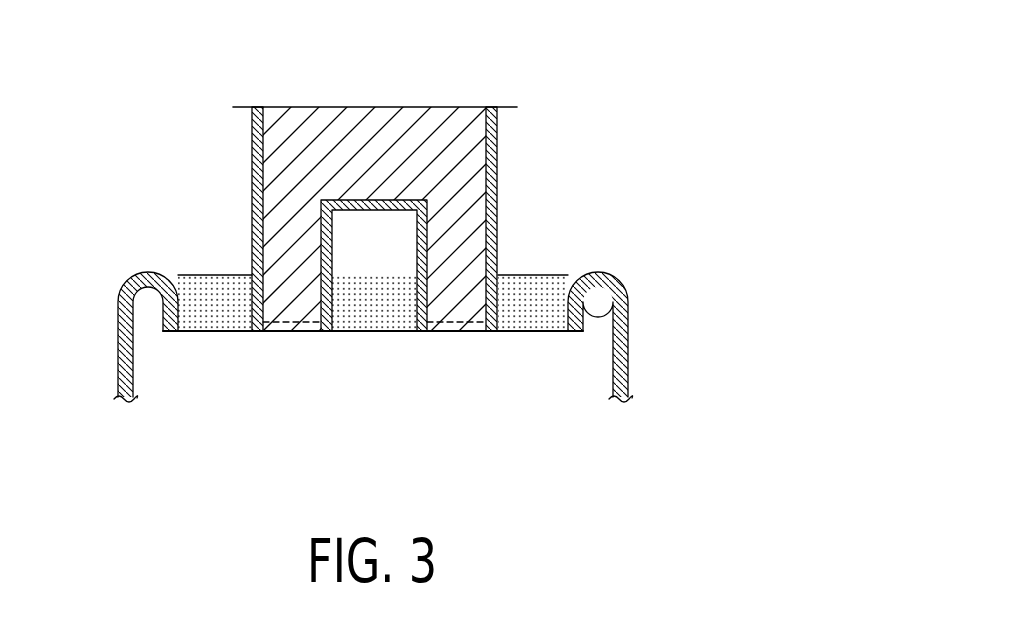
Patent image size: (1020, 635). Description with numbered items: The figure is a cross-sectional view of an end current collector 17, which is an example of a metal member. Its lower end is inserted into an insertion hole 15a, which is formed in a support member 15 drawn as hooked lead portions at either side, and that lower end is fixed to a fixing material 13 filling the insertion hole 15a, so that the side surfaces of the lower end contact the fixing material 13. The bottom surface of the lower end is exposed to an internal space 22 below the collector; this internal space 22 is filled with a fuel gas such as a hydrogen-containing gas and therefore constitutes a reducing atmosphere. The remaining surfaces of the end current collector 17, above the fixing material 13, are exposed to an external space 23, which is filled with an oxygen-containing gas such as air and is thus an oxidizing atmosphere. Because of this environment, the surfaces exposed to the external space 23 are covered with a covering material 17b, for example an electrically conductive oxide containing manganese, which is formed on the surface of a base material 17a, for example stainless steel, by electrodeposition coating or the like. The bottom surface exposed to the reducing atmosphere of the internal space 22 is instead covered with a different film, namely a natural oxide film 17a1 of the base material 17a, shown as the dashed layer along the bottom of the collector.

The fixing material 13 is at (220, 320).
The support member 15 is at (118, 317).
The insertion hole 15a is at (562, 268).
The end current collector 17 is at (449, 80).
The base material 17a is at (360, 123).
The natural oxide film 17a1 is at (289, 330).
The covering material 17b is at (497, 160).
The internal space 22 is at (375, 386).
The external space 23 is at (603, 138).